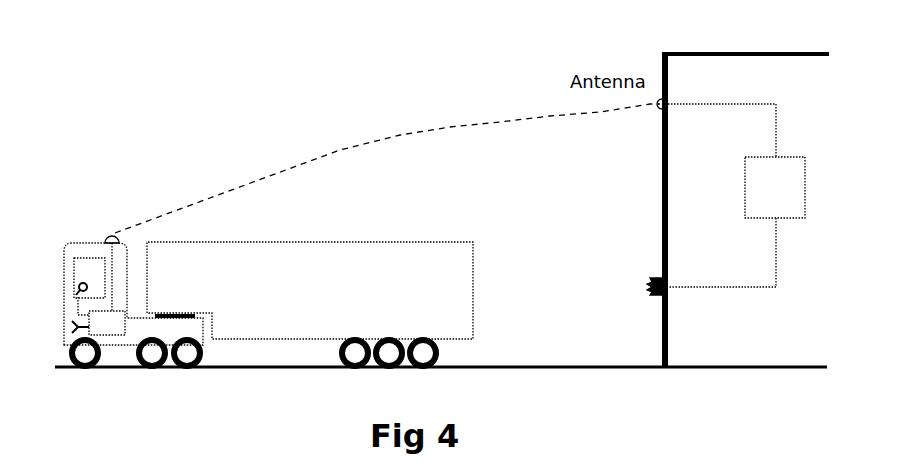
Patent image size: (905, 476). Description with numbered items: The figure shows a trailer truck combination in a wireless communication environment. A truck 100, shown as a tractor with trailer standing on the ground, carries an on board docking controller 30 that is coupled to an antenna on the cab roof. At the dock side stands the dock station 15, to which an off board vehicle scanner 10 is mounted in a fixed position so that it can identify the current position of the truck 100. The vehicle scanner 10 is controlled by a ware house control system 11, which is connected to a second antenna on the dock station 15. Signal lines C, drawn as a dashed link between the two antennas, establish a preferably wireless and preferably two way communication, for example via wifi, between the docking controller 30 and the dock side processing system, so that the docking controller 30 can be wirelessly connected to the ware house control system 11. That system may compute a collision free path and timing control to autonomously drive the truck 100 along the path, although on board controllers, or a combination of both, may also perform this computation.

The dock station 15 is at (755, 45).
The ware house control system 11 is at (788, 203).
The vehicle scanner 10 is at (643, 271).
The docking controller 30 is at (98, 323).
The truck 100 is at (256, 303).
The signal lines C is at (316, 148).